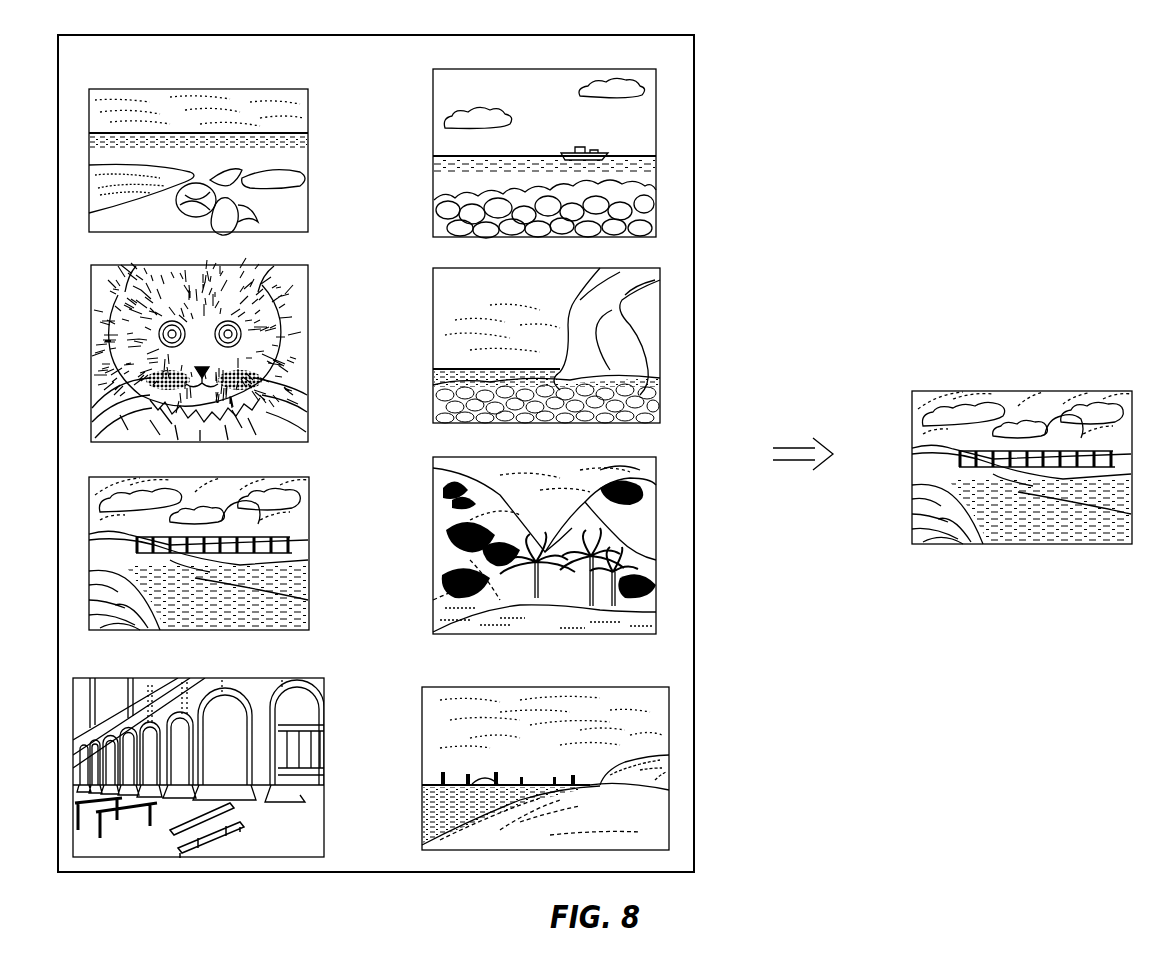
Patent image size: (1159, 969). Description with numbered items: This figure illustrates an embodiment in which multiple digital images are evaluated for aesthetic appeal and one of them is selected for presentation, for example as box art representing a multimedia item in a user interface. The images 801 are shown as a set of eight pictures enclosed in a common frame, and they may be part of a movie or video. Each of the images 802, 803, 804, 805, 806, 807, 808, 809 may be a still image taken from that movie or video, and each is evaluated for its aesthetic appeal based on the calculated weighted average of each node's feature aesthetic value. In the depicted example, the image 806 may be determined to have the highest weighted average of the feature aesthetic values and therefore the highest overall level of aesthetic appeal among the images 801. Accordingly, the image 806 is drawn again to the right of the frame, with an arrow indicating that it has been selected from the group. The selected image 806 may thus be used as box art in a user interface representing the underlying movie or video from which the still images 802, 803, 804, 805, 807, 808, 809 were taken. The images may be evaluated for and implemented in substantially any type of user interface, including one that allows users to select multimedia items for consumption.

The images 801 is at (112, 35).
The still image 802 is at (143, 89).
The still image 803 is at (487, 69).
The still image 804 is at (143, 265).
The still image 805 is at (486, 268).
The selected image 806 is at (141, 477).
The still image 807 is at (486, 457).
The still image 808 is at (127, 678).
The still image 809 is at (474, 687).